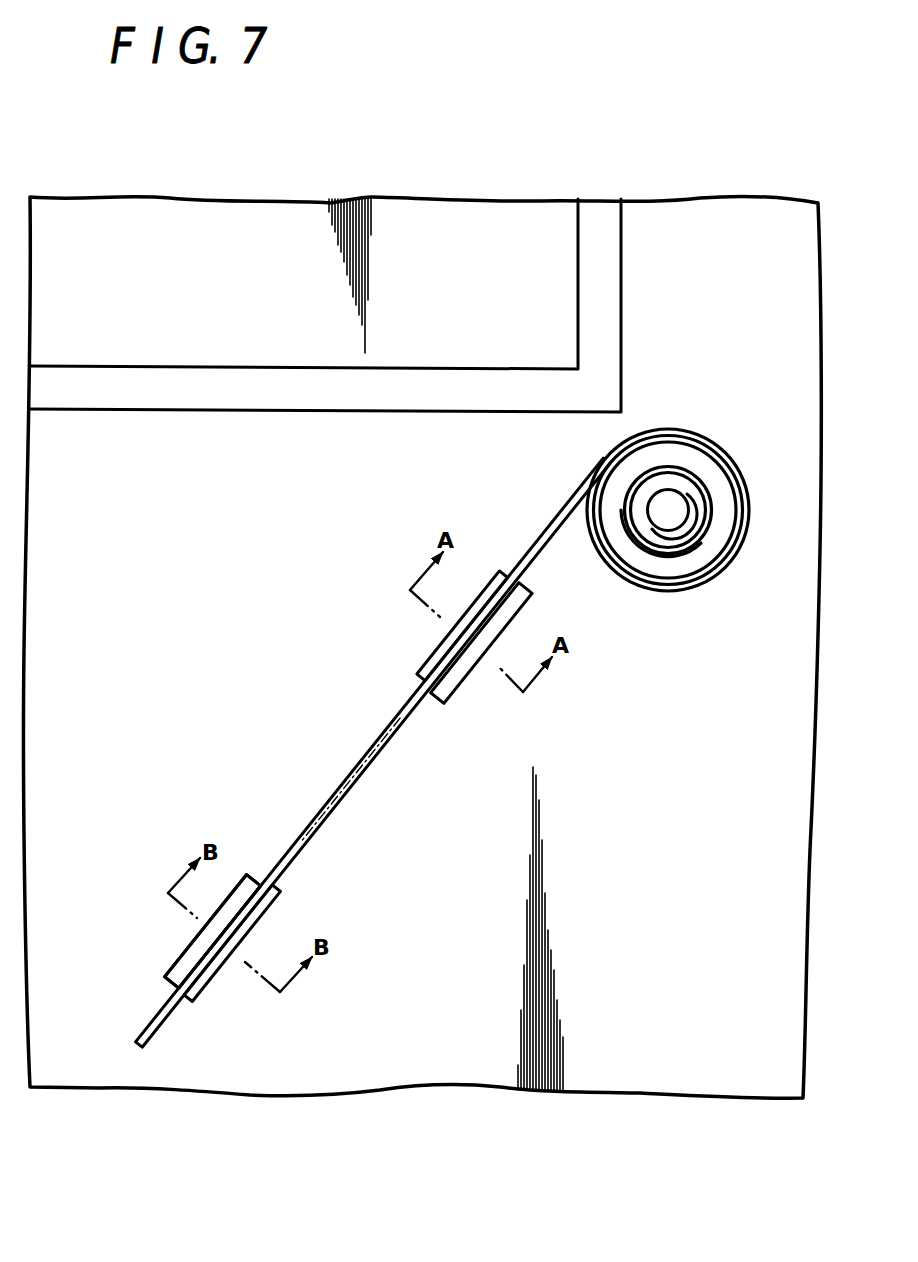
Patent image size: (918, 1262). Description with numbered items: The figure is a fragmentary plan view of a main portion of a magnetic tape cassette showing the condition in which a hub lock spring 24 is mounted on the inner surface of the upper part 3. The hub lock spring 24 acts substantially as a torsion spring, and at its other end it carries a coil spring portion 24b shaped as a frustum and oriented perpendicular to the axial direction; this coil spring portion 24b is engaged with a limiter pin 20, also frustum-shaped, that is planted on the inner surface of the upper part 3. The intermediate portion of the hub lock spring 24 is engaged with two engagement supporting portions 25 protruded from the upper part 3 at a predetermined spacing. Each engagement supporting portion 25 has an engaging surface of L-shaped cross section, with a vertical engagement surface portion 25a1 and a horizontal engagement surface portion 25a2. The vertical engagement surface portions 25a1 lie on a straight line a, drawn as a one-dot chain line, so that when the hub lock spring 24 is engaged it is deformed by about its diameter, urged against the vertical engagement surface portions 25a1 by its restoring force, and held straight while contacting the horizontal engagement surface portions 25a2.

The upper part 3 is at (718, 1073).
The limiter pin 20 is at (680, 507).
The hub lock spring 24 is at (405, 701).
The coil spring portion 24b is at (668, 482).
The engagement supporting portion 25 is at (170, 964).
The vertical engagement surface portion 25a1 is at (455, 663).
The horizontal engagement surface portion 25a2 is at (492, 578).
The straight line a is at (346, 774).